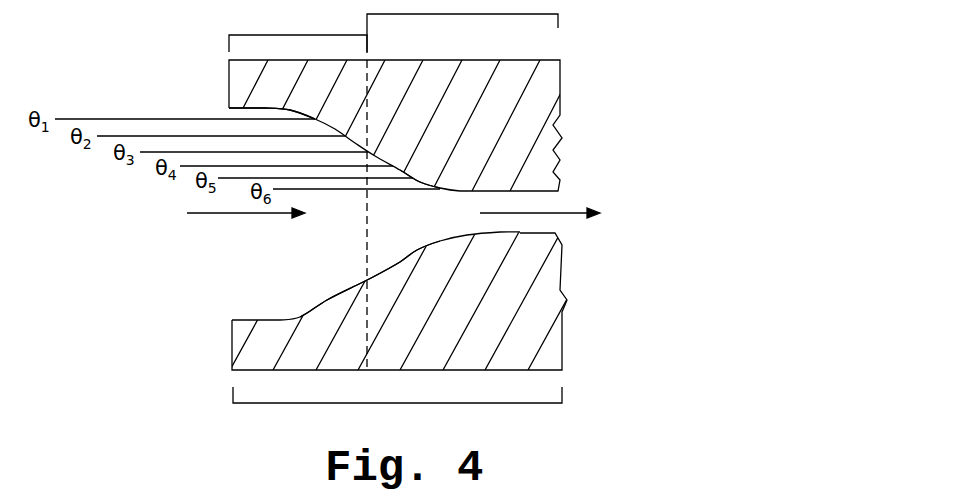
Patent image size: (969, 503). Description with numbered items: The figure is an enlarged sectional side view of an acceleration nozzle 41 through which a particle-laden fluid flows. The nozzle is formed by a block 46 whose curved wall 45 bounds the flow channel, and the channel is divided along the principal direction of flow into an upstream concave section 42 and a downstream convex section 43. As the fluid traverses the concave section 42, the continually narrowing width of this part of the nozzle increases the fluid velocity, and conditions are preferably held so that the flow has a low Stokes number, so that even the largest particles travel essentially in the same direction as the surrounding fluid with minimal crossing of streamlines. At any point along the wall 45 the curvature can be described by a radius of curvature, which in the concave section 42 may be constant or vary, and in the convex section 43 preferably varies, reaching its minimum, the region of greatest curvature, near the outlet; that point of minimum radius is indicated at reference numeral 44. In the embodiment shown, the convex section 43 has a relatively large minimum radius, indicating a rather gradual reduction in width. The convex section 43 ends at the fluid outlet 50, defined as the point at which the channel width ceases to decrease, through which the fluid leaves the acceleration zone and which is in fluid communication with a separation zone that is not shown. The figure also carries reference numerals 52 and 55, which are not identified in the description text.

The acceleration nozzle 41 is at (206, 346).
The concave section 42 is at (298, 34).
The convex section 43 is at (560, 22).
The point of minimum radius of curvature 44 is at (418, 248).
The wall 45 is at (264, 110).
The block 46 is at (496, 148).
The fluid outlet 50 is at (515, 220).
The inlet flow direction 52 is at (235, 217).
The lower tapered surface 55 is at (370, 279).